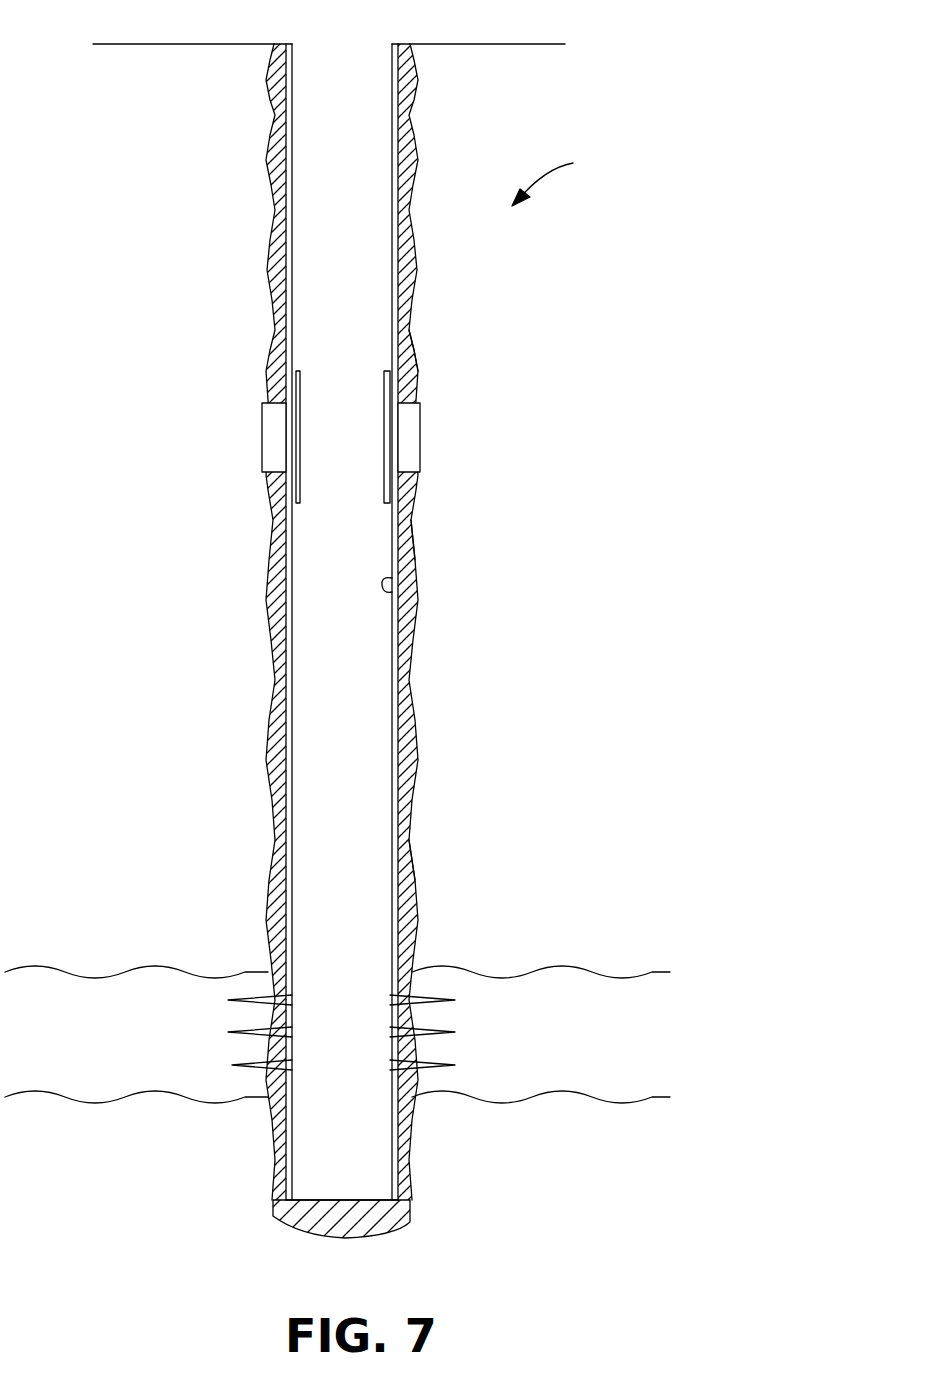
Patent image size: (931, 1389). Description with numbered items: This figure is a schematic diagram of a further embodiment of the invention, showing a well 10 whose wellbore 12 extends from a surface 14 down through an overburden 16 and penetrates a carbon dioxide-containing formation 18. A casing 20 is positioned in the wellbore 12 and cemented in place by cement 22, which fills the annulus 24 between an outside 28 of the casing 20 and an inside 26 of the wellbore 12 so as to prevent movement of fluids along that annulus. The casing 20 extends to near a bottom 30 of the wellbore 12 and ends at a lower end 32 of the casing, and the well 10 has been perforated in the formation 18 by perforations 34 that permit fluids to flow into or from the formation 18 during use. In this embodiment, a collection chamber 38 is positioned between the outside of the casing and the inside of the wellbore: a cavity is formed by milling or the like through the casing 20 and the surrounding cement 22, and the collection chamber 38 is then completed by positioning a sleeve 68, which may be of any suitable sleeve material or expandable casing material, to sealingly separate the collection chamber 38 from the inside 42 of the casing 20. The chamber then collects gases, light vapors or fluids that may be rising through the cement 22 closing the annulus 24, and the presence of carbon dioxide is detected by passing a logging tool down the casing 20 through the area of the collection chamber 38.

The well 10 is at (561, 178).
The wellbore 12 is at (418, 178).
The surface 14 is at (517, 44).
The overburden 16 is at (601, 504).
The carbon dioxide-containing formation 18 is at (630, 1048).
The casing 20 is at (392, 290).
The cement 22 is at (407, 233).
The annulus 24 is at (410, 538).
The inside of wellbore 26 is at (422, 358).
The outside of casing 28 is at (410, 835).
The bottom of wellbore 30 is at (355, 1237).
The lower end of casing 32 is at (402, 1196).
The perforations 34 is at (235, 1065).
The collection chamber 38 is at (273, 429).
The inside of casing 42 is at (392, 590).
The sleeve 68 is at (296, 380).